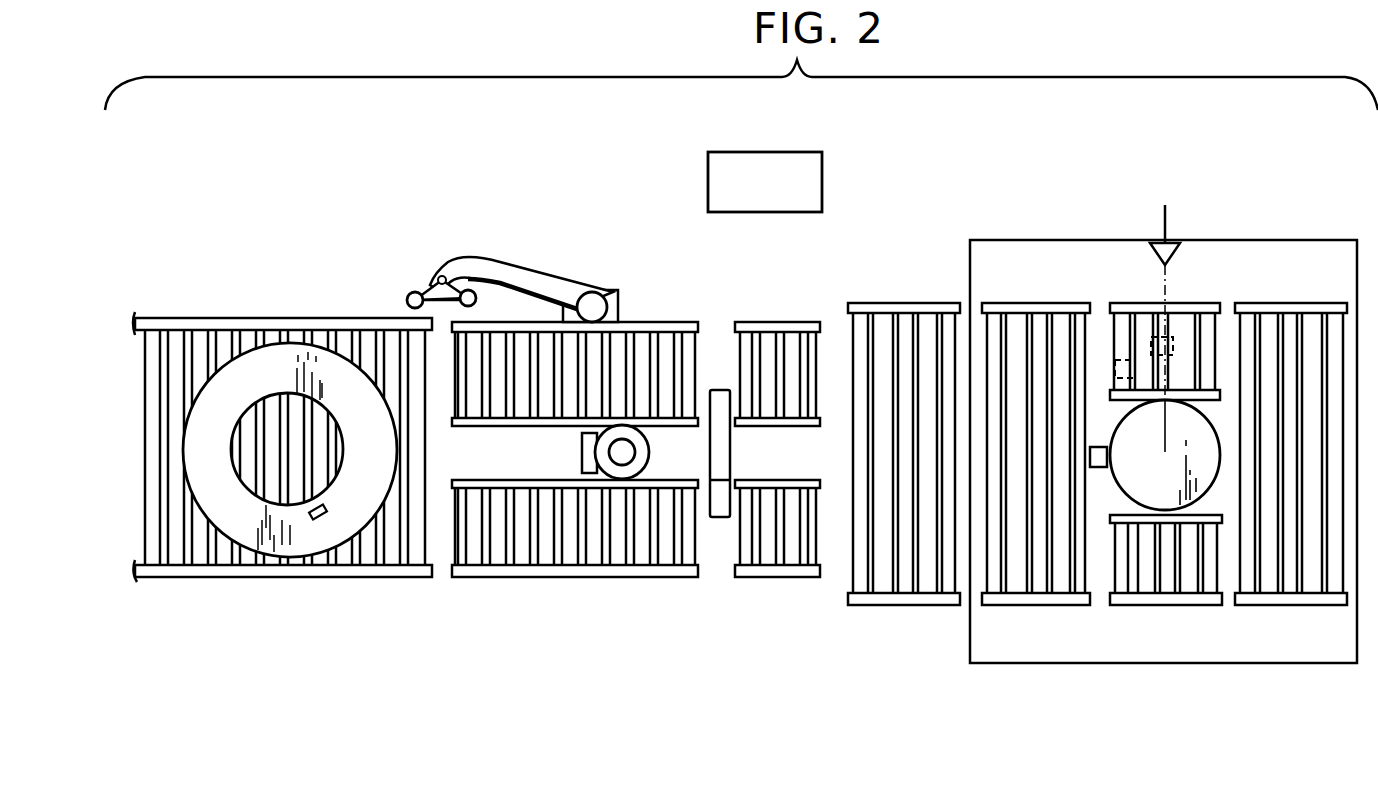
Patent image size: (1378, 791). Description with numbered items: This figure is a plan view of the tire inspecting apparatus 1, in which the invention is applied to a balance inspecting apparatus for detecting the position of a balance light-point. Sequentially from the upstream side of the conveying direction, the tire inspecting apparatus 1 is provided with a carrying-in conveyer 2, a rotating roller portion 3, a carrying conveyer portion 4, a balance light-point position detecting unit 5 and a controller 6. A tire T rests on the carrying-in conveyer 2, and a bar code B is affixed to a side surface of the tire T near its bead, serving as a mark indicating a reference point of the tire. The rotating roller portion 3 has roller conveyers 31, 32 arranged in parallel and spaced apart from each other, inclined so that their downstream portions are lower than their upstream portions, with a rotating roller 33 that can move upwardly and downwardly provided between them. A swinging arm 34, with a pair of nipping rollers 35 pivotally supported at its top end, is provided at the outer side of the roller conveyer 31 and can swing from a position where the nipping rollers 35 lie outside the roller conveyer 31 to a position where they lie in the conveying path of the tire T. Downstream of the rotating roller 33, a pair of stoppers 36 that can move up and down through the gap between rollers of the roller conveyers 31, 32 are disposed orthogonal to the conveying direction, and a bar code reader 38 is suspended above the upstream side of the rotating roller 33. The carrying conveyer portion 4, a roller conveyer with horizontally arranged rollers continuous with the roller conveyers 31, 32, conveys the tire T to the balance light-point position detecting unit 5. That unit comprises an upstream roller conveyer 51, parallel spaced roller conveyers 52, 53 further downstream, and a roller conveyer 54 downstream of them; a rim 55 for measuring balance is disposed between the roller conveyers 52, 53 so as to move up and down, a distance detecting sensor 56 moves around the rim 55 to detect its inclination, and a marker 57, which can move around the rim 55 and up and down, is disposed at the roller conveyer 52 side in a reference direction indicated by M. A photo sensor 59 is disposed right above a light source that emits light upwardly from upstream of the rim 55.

The tire inspecting apparatus 1 is at (960, 174).
The carrying-in conveyer 2 is at (283, 630).
The rotating roller portion 3 is at (622, 615).
The roller conveyer 31 is at (760, 323).
The roller conveyer 32 is at (673, 578).
The rotating roller 33 is at (677, 465).
The swinging arm 34 is at (497, 268).
The pair of nipping rollers 35 is at (408, 298).
The pair of stoppers 36 is at (716, 390).
The bar code reader 38 is at (580, 460).
The carrying conveyer portion 4 is at (909, 639).
The balance light-point position detecting unit 5 is at (1185, 687).
The roller conveyer 51 is at (998, 303).
The roller conveyer 52 is at (1173, 318).
The roller conveyer 53 is at (1157, 603).
The roller conveyer 54 is at (1262, 305).
The rim 55 is at (1212, 470).
The distance detecting sensor 56 is at (1118, 360).
The marker 57 is at (1175, 258).
The photo sensor 59 is at (1098, 468).
The controller 6 is at (708, 170).
The tire T is at (231, 372).
The bar code B is at (320, 518).
The reference direction M is at (1150, 252).